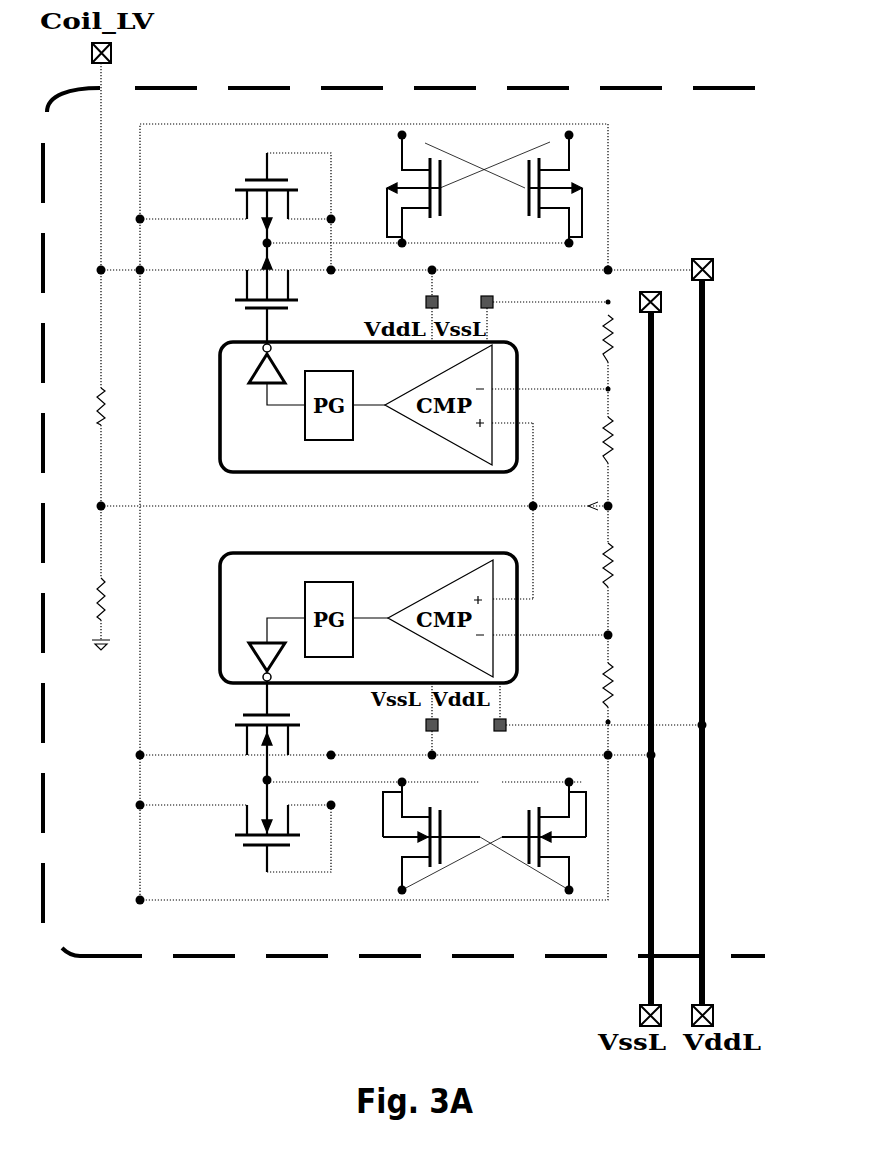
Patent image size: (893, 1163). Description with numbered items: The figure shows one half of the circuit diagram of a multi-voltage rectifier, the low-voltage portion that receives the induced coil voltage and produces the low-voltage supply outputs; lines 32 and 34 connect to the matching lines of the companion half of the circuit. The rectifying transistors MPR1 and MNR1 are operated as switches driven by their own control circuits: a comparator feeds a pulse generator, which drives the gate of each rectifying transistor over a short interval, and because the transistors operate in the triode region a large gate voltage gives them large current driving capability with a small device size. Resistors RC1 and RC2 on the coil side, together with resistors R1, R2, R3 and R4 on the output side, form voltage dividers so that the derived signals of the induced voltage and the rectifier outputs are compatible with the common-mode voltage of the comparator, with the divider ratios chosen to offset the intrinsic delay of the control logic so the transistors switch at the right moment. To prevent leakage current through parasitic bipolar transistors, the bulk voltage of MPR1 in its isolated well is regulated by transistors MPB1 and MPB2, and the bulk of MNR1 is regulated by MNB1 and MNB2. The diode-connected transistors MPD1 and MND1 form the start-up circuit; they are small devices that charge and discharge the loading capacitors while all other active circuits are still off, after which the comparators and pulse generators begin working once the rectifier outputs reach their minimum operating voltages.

The line 32 is at (646, 668).
The line 34 is at (697, 683).
The resistor R1 is at (595, 338).
The resistor R2 is at (595, 440).
The resistor R3 is at (595, 685).
The resistor R4 is at (595, 565).
The resistor RC1 is at (83, 414).
The resistor RC2 is at (83, 588).
The diode-connected transistor MPD1 is at (242, 198).
The rectifying transistor MPR1 is at (242, 293).
The rectifying transistor MNR1 is at (242, 730).
The diode-connected transistor MND1 is at (242, 826).
The bulk regulating transistor MPB1 is at (424, 190).
The bulk regulating transistor MPB2 is at (543, 190).
The bulk regulating transistor MNB1 is at (431, 836).
The bulk regulating transistor MNB2 is at (544, 836).